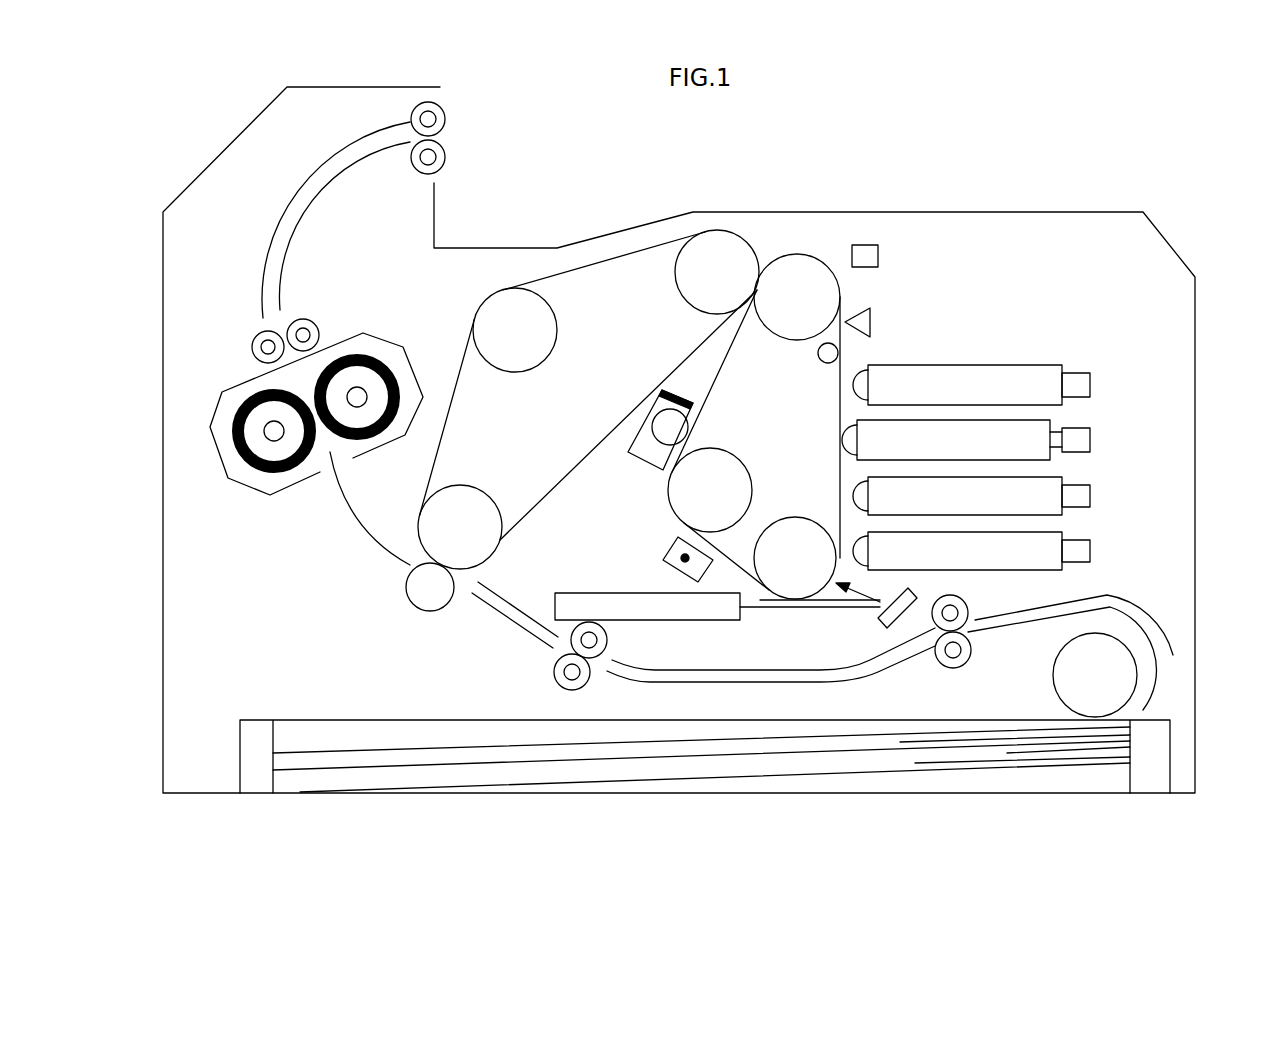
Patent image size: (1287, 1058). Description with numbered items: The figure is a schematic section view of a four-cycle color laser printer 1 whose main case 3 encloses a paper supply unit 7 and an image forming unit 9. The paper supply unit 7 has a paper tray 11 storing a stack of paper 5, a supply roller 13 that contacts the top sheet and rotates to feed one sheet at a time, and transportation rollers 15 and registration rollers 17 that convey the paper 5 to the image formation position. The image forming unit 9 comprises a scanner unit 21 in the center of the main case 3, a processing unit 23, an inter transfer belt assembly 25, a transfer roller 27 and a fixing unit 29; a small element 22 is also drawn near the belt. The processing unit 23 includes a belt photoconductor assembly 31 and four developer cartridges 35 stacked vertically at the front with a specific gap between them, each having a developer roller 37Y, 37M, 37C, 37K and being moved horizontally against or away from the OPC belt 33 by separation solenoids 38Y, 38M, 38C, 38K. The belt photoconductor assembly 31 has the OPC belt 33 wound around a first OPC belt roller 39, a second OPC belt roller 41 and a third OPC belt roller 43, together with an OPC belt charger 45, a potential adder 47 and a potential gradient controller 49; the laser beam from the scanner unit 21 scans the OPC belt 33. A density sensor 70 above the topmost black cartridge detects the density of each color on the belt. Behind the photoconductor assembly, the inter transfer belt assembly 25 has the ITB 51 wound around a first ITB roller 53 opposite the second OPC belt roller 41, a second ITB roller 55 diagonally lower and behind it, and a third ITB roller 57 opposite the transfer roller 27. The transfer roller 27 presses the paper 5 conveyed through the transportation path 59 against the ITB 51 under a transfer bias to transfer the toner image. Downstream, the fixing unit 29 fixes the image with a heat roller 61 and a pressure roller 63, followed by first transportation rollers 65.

The color laser printer 1 is at (586, 805).
The main case 3 is at (1030, 212).
The paper 5 is at (968, 757).
The paper supply unit 7 is at (1150, 797).
The image forming unit 9 is at (467, 605).
The paper tray 11 is at (1077, 780).
The supply roller 13 is at (1133, 677).
The transportation rollers 15 is at (973, 657).
The registration rollers 17 is at (553, 665).
The scanner unit 21 is at (722, 622).
The cleaning device 22 is at (642, 460).
The processing unit 23 is at (937, 401).
The inter transfer belt assembly 25 is at (588, 373).
The transfer roller 27 is at (415, 606).
The fixing unit 29 is at (295, 415).
The belt photoconductor assembly 31 is at (797, 254).
The organic photoconductor belt 33 is at (712, 398).
The developer cartridges 35 is at (1064, 476).
The black developer roller 37K is at (870, 388).
The cyan developer roller 37C is at (860, 442).
The magenta developer roller 37M is at (870, 500).
The yellow developer roller 37Y is at (870, 554).
The black separation solenoid 38K is at (1090, 385).
The cyan separation solenoid 38C is at (1090, 440).
The magenta separation solenoid 38M is at (1090, 495).
The yellow separation solenoid 38Y is at (1090, 551).
The first OPC belt roller 39 is at (793, 518).
The second OPC belt roller 41 is at (792, 340).
The third OPC belt roller 43 is at (740, 467).
The OPC belt charger 45 is at (673, 572).
The potential adder 47 is at (860, 245).
The potential gradient controller 49 is at (828, 363).
The inter transfer belt 51 is at (450, 412).
The first ITB roller 53 is at (678, 290).
The second ITB roller 55 is at (547, 360).
The third ITB roller 57 is at (490, 492).
The transportation path 59 is at (362, 513).
The heat roller 61 is at (343, 347).
The pressure roller 63 is at (257, 473).
The first transportation rollers 65 is at (255, 335).
The density sensor 70 is at (870, 322).